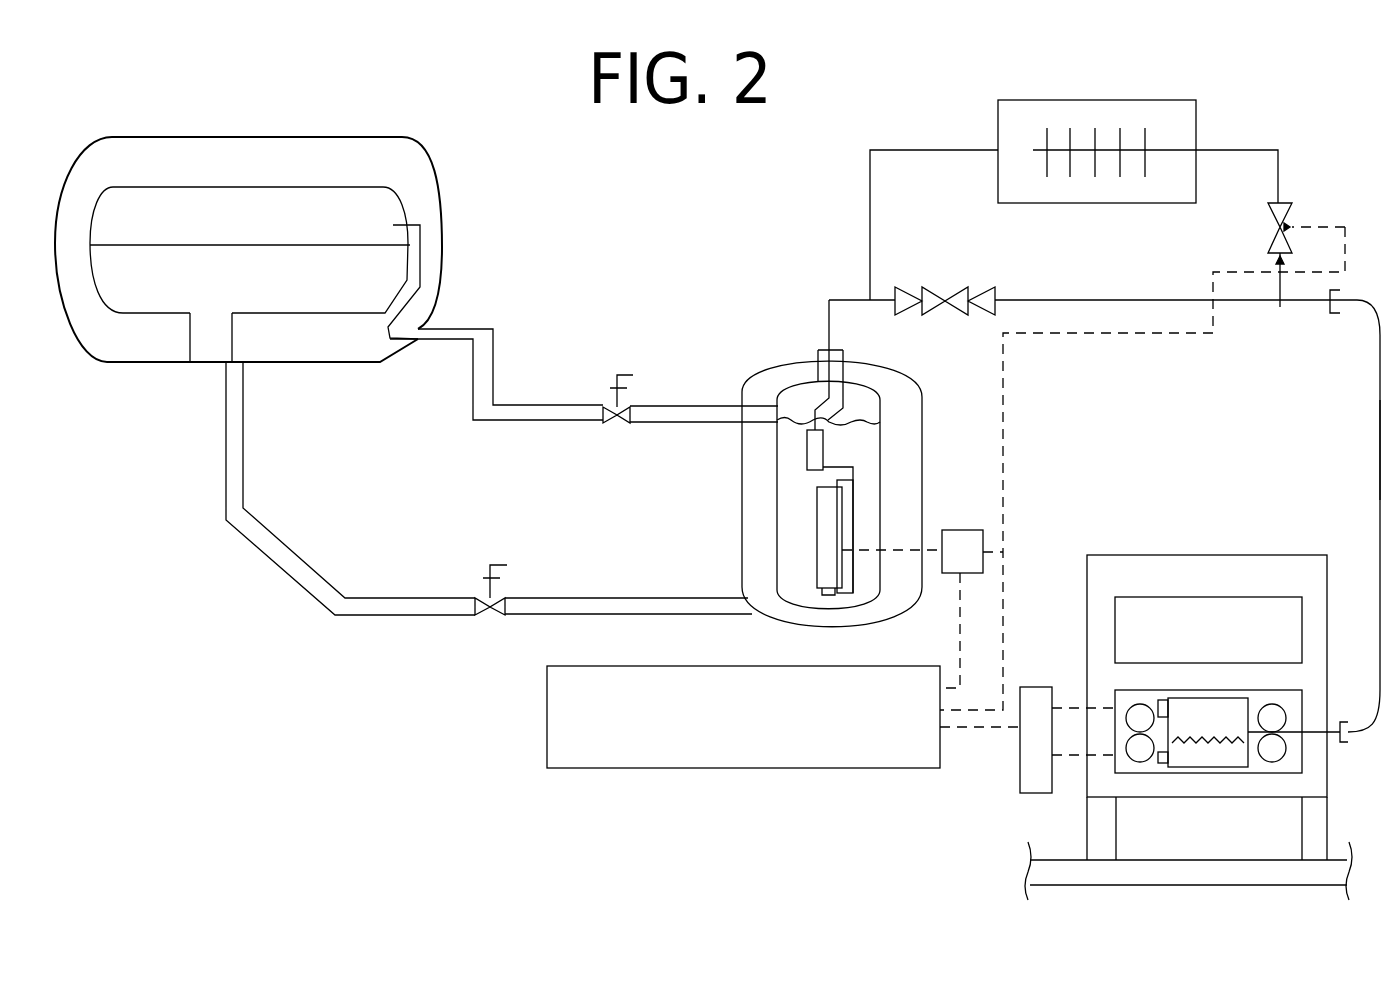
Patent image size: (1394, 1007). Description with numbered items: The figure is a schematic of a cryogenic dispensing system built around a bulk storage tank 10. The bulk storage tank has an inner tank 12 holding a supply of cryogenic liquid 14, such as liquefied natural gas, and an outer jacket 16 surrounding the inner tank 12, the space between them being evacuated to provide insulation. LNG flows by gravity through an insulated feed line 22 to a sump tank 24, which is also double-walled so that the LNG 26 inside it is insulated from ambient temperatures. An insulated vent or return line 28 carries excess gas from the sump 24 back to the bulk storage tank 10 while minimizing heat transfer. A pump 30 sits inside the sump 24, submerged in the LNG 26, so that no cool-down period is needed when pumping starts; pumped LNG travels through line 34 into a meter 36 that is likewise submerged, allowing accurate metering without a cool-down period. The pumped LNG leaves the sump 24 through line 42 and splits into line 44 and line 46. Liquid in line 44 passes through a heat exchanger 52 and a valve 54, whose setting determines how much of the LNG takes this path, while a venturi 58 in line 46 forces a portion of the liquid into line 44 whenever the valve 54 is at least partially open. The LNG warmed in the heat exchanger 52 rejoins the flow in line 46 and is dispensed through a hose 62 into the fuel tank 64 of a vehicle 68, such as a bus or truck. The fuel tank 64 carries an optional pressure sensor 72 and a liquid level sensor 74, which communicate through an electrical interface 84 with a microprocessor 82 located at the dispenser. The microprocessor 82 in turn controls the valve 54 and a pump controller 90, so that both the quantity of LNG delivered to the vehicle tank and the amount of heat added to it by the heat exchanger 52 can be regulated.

The bulk storage tank 10 is at (356, 115).
The inner tank 12 is at (192, 318).
The cryogenic liquid 14 is at (313, 280).
The outer jacket 16 is at (267, 136).
The insulated feed line 22 is at (363, 618).
The sump tank 24 is at (742, 488).
The LNG 26 is at (790, 537).
The insulated vent or return line 28 is at (497, 390).
The pump 30 is at (832, 522).
The line 34 is at (853, 492).
The meter 36 is at (823, 455).
The line 42 is at (829, 330).
The line 44 is at (870, 222).
The line 46 is at (1053, 299).
The heat exchanger 52 is at (998, 122).
The valve 54 is at (1286, 222).
The venturi 58 is at (935, 290).
The hose 62 is at (1380, 398).
The fuel tank 64 is at (1190, 697).
The vehicle 68 is at (1185, 557).
The pressure sensor 72 is at (1158, 700).
The liquid level sensor 74 is at (1163, 765).
The microprocessor 82 is at (636, 768).
The electrical interface 84 is at (1020, 778).
The pump controller 90 is at (986, 548).